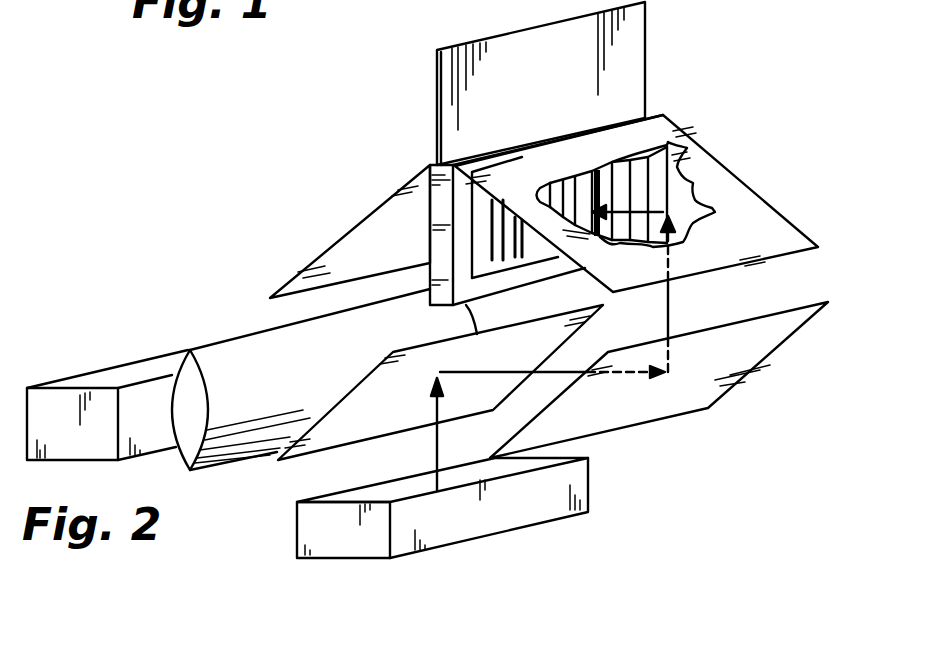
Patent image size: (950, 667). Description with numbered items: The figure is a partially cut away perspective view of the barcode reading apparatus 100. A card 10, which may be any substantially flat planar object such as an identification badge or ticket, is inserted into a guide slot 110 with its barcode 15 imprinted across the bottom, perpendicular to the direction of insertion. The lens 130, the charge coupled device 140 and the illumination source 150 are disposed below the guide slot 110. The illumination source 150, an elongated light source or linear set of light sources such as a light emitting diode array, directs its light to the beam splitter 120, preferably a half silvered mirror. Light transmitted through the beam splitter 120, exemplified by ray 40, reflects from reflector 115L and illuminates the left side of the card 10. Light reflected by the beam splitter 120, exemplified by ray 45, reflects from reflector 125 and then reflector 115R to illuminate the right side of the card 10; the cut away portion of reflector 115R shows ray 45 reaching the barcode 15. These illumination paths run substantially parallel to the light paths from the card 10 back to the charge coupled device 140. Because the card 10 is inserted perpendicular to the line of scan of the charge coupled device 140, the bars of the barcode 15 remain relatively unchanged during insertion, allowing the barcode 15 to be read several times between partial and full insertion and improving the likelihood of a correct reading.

The card 10 is at (437, 86).
The barcode 15 is at (612, 245).
The ray 40 is at (437, 456).
The ray 45 is at (669, 310).
The barcode reading apparatus 100 is at (246, 210).
The guide slot 110 is at (430, 165).
The reflector 115L is at (357, 220).
The reflector 115R is at (720, 164).
The beam splitter 120 is at (368, 376).
The reflector 125 is at (744, 377).
The lens 130 is at (187, 348).
The charge coupled device 140 is at (104, 368).
The illumination source 150 is at (297, 542).